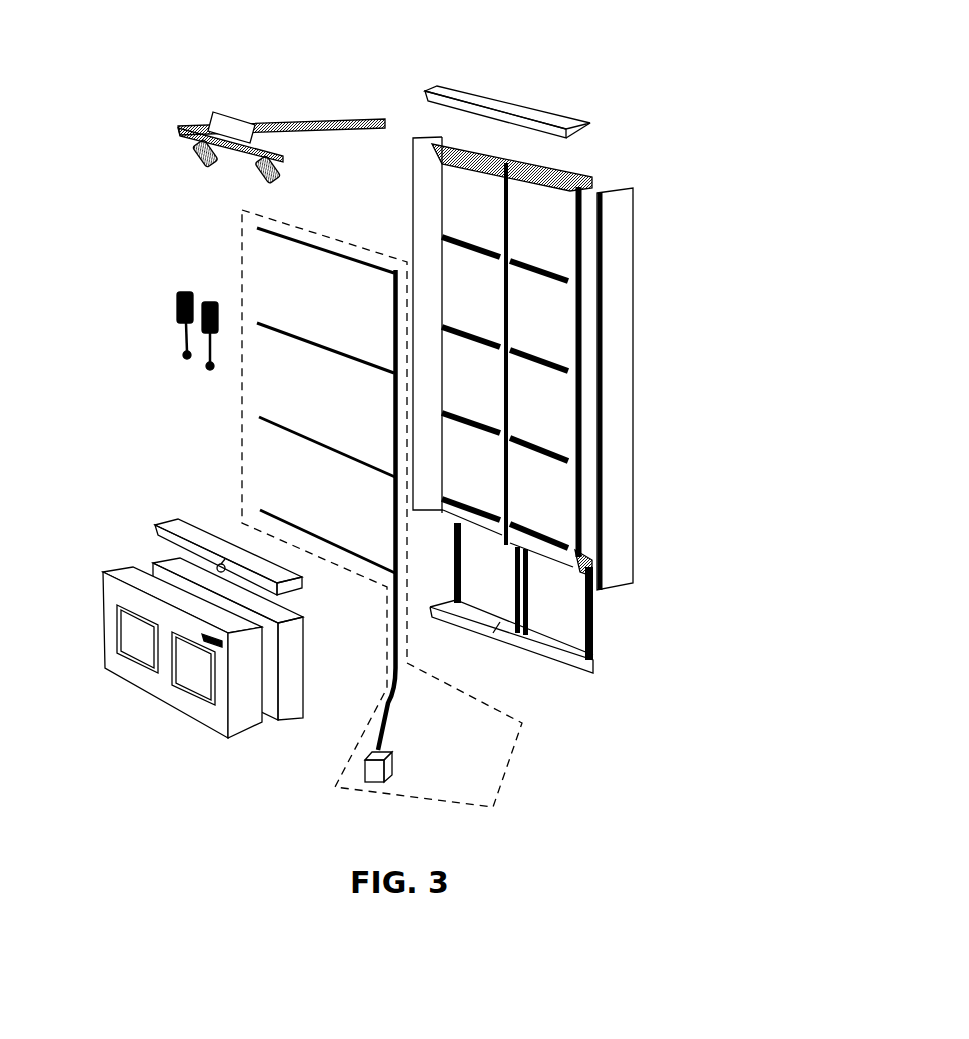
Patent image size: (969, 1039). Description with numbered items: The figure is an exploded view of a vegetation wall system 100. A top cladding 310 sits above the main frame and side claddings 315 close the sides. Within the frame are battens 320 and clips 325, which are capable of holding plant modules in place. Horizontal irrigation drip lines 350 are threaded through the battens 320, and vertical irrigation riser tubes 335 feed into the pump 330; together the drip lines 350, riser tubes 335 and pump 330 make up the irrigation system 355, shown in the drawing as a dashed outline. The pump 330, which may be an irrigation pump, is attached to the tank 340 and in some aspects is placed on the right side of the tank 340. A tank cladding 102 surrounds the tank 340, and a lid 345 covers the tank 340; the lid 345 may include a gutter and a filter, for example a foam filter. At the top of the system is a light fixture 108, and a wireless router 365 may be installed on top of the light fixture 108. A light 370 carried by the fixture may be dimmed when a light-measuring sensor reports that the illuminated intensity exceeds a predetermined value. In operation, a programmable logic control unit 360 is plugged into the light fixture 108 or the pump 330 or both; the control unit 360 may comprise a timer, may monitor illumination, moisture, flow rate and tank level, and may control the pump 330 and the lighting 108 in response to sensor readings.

The vegetation wall system 100 is at (636, 108).
The tank cladding 102 is at (157, 702).
The light fixture 108 is at (297, 123).
The top cladding 310 is at (525, 104).
The side claddings 315 is at (624, 222).
The battens 320 is at (558, 455).
The clips 325 is at (536, 532).
The pump 330 is at (393, 768).
The vertical irrigation riser tubes 335 is at (390, 328).
The tank 340 is at (294, 638).
The lid 345 is at (158, 520).
The horizontal irrigation drip lines 350 is at (347, 453).
The irrigation system 355 is at (358, 240).
The programmable logic control unit 360 is at (172, 328).
The wireless router 365 is at (207, 120).
The light 370 is at (190, 156).